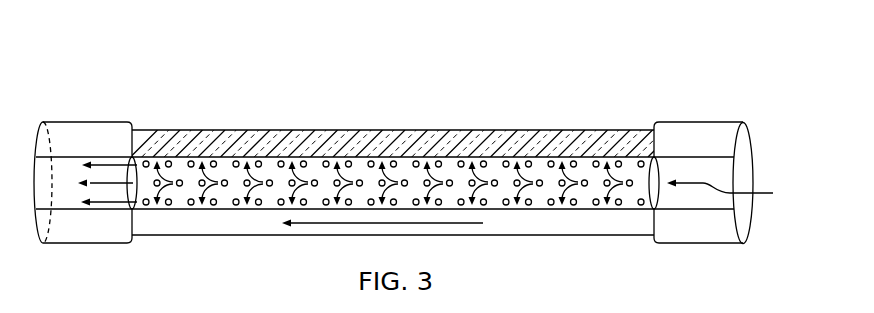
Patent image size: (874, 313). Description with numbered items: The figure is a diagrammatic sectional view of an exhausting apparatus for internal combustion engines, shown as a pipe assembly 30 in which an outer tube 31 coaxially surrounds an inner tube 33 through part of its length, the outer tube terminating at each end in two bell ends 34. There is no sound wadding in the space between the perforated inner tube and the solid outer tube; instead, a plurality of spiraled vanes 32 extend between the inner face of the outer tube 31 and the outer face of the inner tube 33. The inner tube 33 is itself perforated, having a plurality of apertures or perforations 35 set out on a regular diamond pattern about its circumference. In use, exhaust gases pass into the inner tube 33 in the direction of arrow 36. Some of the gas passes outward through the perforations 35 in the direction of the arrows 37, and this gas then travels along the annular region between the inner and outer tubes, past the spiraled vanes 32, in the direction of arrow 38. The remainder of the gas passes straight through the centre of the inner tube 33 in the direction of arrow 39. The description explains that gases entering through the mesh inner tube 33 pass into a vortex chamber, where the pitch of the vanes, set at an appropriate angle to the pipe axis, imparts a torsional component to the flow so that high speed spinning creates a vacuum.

The pipe assembly 30 is at (668, 55).
The outer tube 31 is at (607, 130).
The spiraled vanes 32 is at (177, 138).
The inner tube 33 is at (585, 210).
The bell ends 34 is at (82, 122).
The apertures or perforations 35 is at (318, 162).
The arrow 36 is at (732, 194).
The arrows 37 is at (493, 200).
The arrow 38 is at (318, 223).
The arrow 39 is at (100, 167).